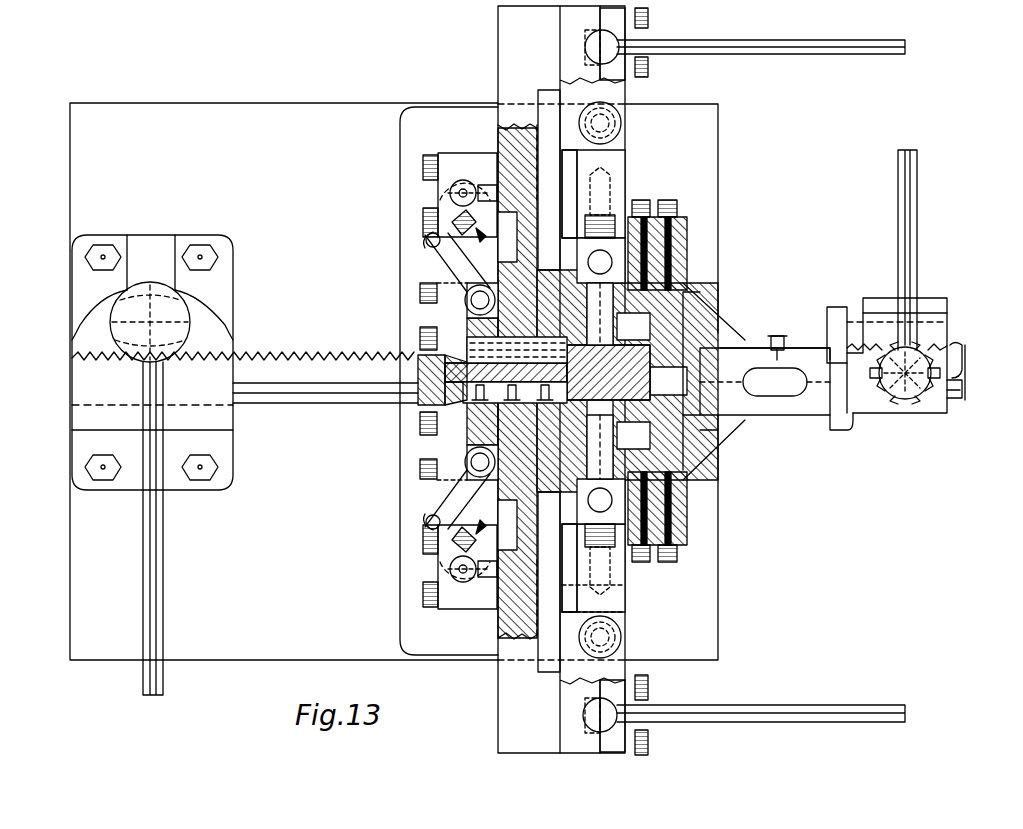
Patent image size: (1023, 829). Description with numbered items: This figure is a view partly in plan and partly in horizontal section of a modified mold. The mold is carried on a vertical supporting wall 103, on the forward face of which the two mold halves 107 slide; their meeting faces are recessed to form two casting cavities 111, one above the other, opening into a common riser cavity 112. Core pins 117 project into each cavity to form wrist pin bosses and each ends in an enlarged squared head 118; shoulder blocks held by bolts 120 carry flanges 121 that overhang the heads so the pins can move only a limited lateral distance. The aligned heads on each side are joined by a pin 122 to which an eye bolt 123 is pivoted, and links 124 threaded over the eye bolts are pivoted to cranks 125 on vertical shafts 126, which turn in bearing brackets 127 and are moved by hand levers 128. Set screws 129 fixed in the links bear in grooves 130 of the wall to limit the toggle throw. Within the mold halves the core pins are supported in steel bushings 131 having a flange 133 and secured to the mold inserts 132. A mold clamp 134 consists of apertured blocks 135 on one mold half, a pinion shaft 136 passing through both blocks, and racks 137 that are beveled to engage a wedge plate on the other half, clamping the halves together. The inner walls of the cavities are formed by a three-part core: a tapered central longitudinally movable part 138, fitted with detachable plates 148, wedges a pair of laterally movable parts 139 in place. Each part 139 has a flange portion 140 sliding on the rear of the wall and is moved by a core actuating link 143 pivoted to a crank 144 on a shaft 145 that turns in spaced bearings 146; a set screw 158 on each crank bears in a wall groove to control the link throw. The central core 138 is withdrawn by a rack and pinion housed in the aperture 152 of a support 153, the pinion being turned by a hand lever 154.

The vertical supporting wall 103 is at (504, 682).
The mold halves 107 is at (740, 346).
The casting cavities 111 is at (740, 348).
The riser cavity 112 is at (695, 418).
The core pins 117 is at (466, 295).
The core pin head 118 is at (605, 185).
The bolts 120 is at (700, 222).
The flange 121 is at (596, 232).
The pin 122 is at (692, 255).
The eye bolt 123 is at (608, 210).
The links 124 is at (620, 615).
The cranks 125 is at (622, 98).
The vertical shafts 126 is at (620, 38).
The bearing brackets 127 is at (640, 752).
The hand levers 128 is at (878, 55).
The set screws 129 is at (547, 130).
The grooves 130 is at (620, 580).
The steel bushings 131 is at (705, 440).
The mold inserts 132 is at (695, 420).
The flange 133 is at (690, 470).
The mold clamp 134 is at (870, 413).
The apertured blocks 135 is at (855, 415).
The pinion shaft 136 is at (912, 350).
The rack 137 is at (838, 320).
The central longitudinally movable core part 138 is at (440, 368).
The laterally movable core parts 139 is at (545, 192).
The flange portion 140 is at (475, 420).
The core actuating link 143 is at (440, 480).
The crank 144 is at (450, 225).
The shaft 145 is at (450, 193).
The bearings 146 is at (470, 153).
The detachable plates 148 is at (435, 398).
The aperture 152 is at (80, 405).
The support 153 is at (72, 350).
The hand lever 154 is at (160, 558).
The set screw 158 is at (425, 245).